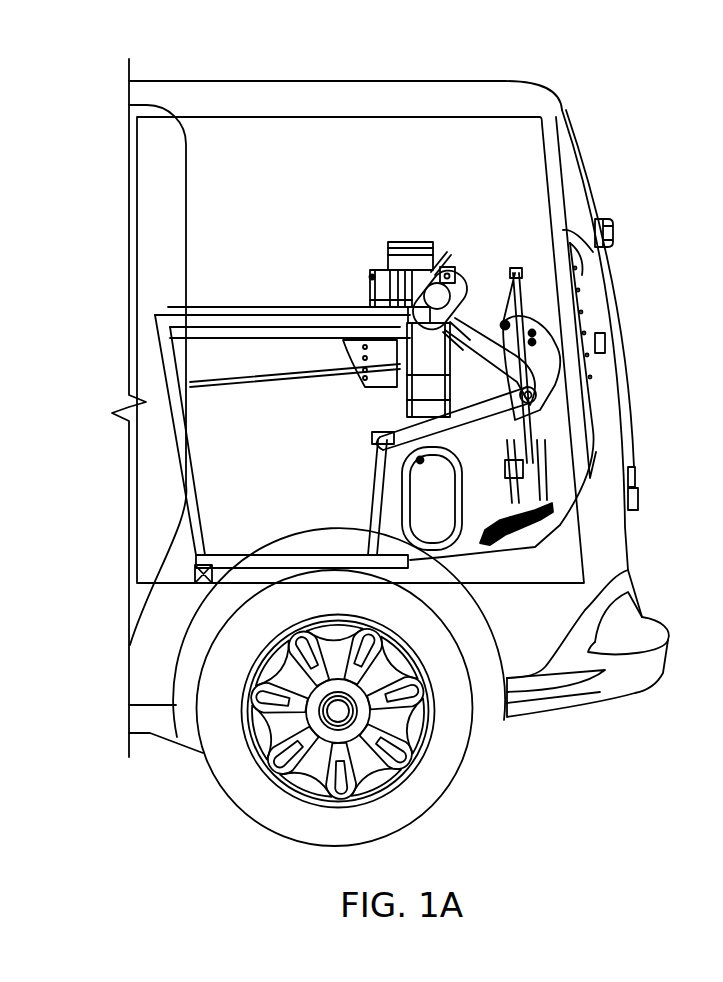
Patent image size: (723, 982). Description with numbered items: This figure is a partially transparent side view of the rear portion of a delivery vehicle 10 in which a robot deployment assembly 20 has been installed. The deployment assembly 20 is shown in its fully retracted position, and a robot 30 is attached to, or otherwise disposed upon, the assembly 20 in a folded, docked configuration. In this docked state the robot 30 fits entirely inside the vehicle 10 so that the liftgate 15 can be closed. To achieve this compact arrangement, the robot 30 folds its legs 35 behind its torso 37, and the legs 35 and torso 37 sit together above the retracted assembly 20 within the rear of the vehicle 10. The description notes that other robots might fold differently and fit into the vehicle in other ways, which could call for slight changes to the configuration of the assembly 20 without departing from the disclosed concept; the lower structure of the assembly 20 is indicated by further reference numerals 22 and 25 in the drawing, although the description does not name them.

The delivery vehicle 10 is at (478, 78).
The liftgate 15 is at (630, 535).
The robot deployment assembly 20 is at (150, 367).
The support member 22 is at (183, 460).
The platform surface 25 is at (233, 320).
The robot 30 is at (432, 362).
The legs 35 is at (532, 433).
The torso 37 is at (440, 352).